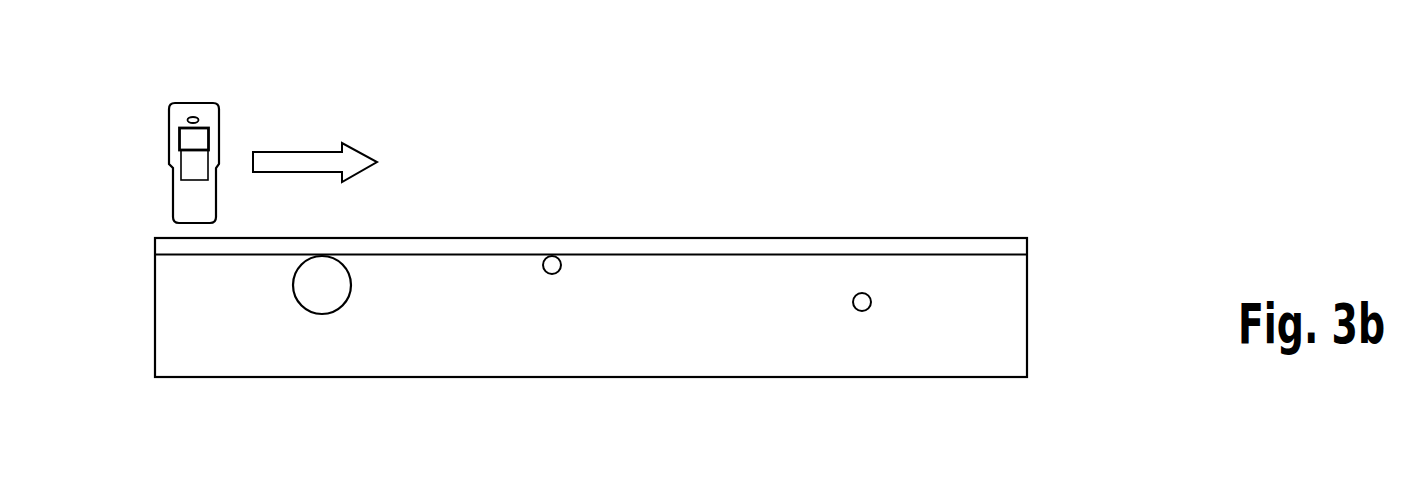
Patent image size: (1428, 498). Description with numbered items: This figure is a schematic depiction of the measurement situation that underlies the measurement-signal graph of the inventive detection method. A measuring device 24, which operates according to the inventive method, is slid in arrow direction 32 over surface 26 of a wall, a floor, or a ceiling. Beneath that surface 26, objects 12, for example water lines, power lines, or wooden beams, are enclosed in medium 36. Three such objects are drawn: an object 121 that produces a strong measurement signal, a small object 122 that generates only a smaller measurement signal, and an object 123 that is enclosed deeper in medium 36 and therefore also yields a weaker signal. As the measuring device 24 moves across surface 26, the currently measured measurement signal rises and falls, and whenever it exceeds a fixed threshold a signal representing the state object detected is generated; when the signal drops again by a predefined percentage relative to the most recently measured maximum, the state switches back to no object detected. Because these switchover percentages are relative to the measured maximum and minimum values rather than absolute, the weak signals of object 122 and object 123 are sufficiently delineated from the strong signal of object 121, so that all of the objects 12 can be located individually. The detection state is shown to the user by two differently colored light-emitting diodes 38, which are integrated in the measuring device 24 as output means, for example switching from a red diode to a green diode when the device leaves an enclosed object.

The objects 12 is at (582, 311).
The object 121 is at (298, 285).
The object 122 is at (560, 268).
The object 123 is at (870, 302).
The measuring device 24 is at (143, 162).
The surface 26 is at (964, 236).
The arrow direction 32 is at (266, 124).
The medium 36 is at (1018, 313).
The light-emitting diodes 38 is at (190, 137).